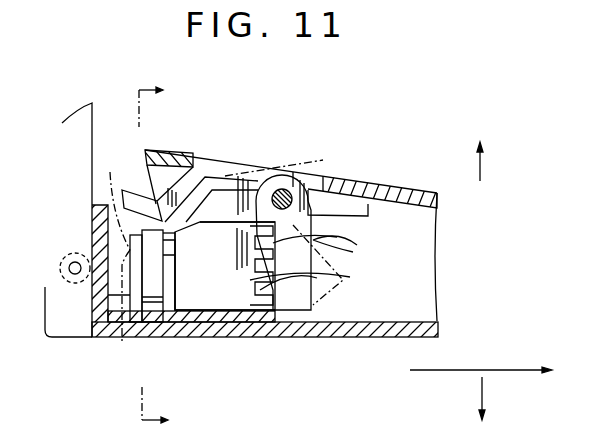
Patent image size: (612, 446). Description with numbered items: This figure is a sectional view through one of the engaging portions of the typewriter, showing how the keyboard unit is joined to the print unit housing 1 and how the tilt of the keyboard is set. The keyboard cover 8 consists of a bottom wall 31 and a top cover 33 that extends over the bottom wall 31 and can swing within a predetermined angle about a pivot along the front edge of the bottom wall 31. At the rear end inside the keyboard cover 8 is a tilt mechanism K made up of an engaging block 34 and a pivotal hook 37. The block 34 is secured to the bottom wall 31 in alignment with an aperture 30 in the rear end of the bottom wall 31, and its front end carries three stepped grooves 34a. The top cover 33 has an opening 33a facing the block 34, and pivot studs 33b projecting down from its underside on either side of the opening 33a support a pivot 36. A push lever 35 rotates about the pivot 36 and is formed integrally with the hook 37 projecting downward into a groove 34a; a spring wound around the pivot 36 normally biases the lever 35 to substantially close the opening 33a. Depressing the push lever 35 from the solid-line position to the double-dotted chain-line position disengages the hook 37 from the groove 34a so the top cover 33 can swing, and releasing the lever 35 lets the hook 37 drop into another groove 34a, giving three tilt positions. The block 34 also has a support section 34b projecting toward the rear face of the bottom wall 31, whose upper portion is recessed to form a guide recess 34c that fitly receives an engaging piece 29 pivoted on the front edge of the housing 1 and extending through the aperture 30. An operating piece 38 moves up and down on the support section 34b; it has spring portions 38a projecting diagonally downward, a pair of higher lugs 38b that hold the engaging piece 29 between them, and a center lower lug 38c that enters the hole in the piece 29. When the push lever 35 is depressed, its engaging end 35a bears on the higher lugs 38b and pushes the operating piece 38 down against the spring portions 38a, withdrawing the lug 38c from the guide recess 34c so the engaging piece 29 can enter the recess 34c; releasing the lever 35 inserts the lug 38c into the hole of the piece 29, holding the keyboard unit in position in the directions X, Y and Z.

The print unit housing 1 is at (93, 112).
The keyboard cover 8 is at (171, 150).
The engaging piece 29 is at (98, 282).
The aperture 30 is at (130, 252).
The bottom wall 31 is at (313, 332).
The top cover 33 is at (411, 192).
The opening 33a is at (339, 177).
The pivot stud 33b is at (372, 212).
The engaging block 34 is at (237, 297).
The stepped groove 34a is at (290, 302).
The support section 34b is at (118, 252).
The guide recess 34c is at (117, 312).
The push lever 35 is at (250, 138).
The engaging end 35a is at (121, 189).
The pivot 36 is at (283, 174).
The hook 37 is at (332, 246).
The operating piece 38 is at (213, 301).
The spring portion 38a is at (153, 320).
The higher lug 38b is at (177, 237).
The center lower lug 38c is at (177, 253).
The tilt mechanism K is at (400, 298).
The direction X is at (517, 372).
The direction Y is at (482, 163).
The direction Z is at (483, 398).
The section line A- A is at (162, 257).